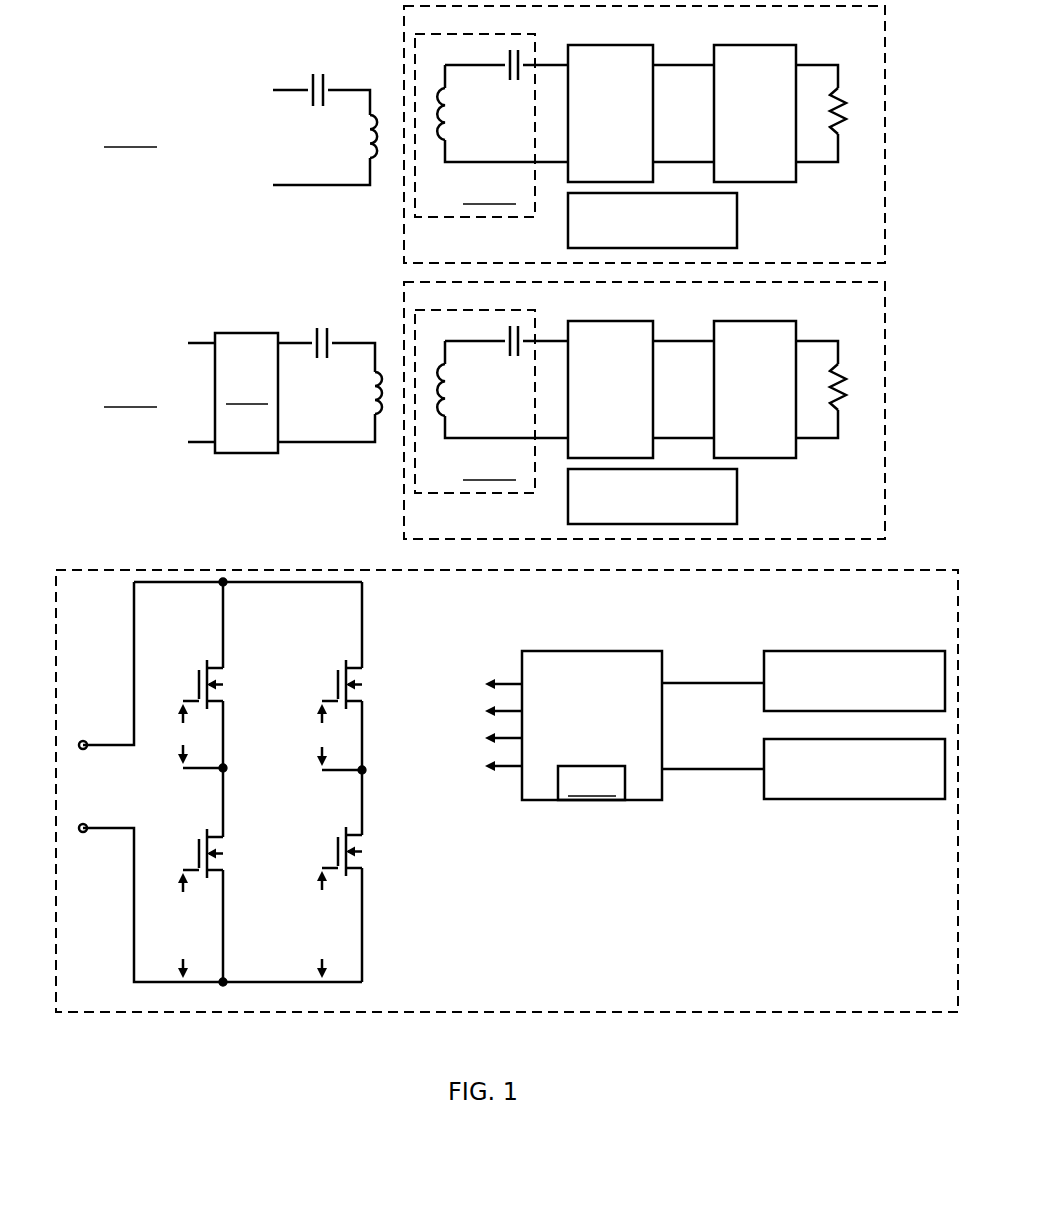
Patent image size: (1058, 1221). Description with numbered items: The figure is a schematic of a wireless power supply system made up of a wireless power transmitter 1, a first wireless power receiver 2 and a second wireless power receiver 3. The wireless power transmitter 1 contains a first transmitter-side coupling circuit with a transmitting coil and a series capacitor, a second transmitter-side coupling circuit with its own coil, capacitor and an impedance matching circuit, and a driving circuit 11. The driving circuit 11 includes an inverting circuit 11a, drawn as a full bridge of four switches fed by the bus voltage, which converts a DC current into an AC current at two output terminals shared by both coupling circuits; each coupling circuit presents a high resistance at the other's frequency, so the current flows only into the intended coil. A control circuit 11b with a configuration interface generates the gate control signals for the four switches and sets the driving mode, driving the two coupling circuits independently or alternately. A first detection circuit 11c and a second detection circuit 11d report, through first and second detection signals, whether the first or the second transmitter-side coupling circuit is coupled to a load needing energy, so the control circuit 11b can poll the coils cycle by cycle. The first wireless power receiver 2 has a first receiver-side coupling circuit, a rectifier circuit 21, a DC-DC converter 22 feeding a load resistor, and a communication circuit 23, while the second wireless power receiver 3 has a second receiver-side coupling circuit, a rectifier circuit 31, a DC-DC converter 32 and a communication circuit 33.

The wireless power transmitter 1 is at (90, 130).
The driving circuit 11 is at (180, 570).
The inverting circuit 11a is at (362, 945).
The control circuit 11b is at (568, 800).
The first detection circuit 11c is at (830, 651).
The second detection circuit 11d is at (805, 799).
The first wireless power receiver 2 is at (862, 252).
The rectifier circuit 21 is at (626, 126).
The DC-DC converter 22 is at (769, 126).
The communication circuit 23 is at (667, 232).
The second wireless power receiver 3 is at (869, 528).
The rectifier circuit 31 is at (626, 402).
The DC-DC converter 32 is at (769, 402).
The communication circuit 33 is at (667, 508).